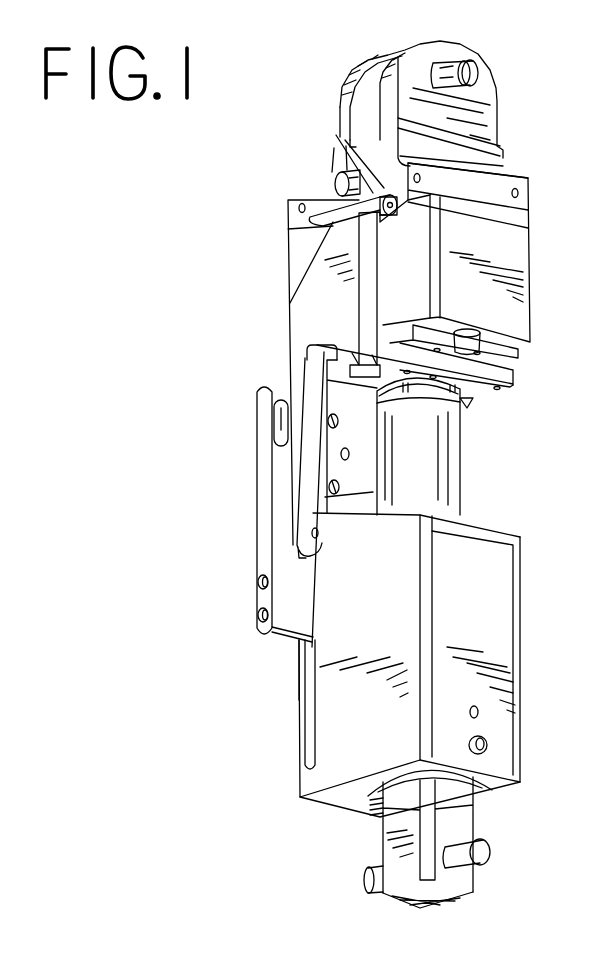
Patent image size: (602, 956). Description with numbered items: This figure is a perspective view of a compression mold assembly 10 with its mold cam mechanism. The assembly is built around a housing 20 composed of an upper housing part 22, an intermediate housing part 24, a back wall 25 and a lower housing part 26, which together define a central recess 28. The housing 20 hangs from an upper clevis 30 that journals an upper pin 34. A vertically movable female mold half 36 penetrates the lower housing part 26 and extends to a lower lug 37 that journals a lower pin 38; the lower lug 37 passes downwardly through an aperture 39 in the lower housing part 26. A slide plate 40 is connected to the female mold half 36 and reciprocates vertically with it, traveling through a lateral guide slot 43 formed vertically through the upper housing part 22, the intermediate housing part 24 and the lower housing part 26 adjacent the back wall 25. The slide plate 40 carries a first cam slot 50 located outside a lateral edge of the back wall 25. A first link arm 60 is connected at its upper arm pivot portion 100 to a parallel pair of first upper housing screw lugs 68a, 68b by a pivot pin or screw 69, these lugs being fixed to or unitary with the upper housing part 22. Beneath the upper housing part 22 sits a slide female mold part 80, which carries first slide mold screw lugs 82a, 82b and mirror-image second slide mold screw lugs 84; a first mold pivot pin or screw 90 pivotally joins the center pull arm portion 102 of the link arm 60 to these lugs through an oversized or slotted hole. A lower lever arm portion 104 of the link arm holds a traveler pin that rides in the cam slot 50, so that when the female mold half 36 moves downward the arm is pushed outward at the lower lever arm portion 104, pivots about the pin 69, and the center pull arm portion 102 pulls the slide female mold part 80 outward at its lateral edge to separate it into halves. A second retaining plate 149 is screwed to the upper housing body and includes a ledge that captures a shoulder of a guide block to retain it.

The compression mold assembly 10 is at (556, 144).
The housing 20 is at (276, 270).
The upper housing part 22 is at (512, 268).
The intermediate housing part 24 is at (350, 413).
The back wall 25 is at (297, 720).
The lower housing part 26 is at (480, 641).
The central recess 28 is at (486, 480).
The upper clevis 30 is at (474, 110).
The upper pin 34 is at (474, 64).
The female mold half 36 is at (448, 437).
The lower lug 37 is at (450, 797).
The lower pin 38 is at (473, 868).
The aperture 39 is at (468, 808).
The slide plate 40 is at (259, 523).
The lateral guide slot 43 is at (310, 707).
The first cam slot 50 is at (283, 415).
The first link arm 60 is at (300, 308).
The first upper housing screw lug 68a is at (385, 195).
The first upper housing screw lug 68b is at (325, 216).
The pivot pin or screw 69 is at (386, 196).
The slide female mold part 80 is at (524, 381).
The first slide mold screw lug 82a is at (371, 347).
The first slide mold screw lug 82b is at (326, 352).
The second slide mold screw lugs 84 is at (503, 407).
The first mold pivot pin or screw 90 is at (400, 343).
The upper arm pivot portion 100 is at (347, 232).
The center pull arm portion 102 is at (348, 350).
The lower lever arm portion 104 is at (300, 480).
The second retaining plate 149 is at (510, 350).